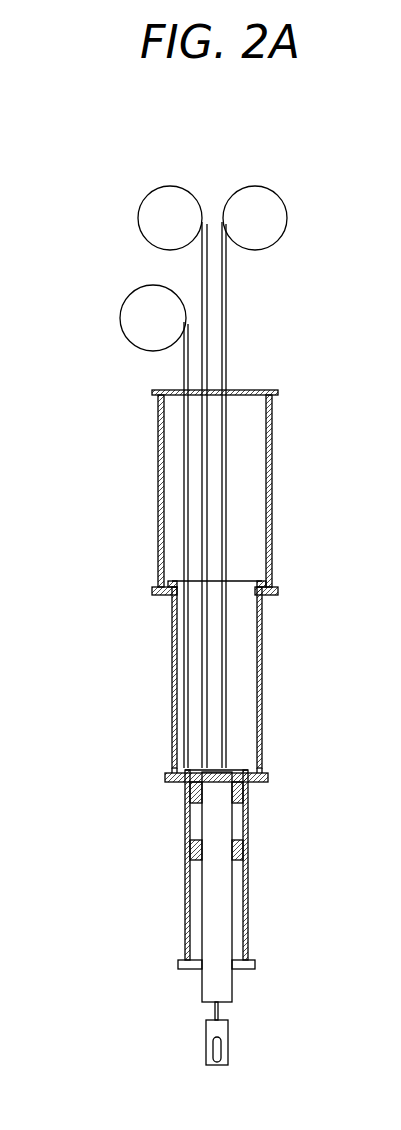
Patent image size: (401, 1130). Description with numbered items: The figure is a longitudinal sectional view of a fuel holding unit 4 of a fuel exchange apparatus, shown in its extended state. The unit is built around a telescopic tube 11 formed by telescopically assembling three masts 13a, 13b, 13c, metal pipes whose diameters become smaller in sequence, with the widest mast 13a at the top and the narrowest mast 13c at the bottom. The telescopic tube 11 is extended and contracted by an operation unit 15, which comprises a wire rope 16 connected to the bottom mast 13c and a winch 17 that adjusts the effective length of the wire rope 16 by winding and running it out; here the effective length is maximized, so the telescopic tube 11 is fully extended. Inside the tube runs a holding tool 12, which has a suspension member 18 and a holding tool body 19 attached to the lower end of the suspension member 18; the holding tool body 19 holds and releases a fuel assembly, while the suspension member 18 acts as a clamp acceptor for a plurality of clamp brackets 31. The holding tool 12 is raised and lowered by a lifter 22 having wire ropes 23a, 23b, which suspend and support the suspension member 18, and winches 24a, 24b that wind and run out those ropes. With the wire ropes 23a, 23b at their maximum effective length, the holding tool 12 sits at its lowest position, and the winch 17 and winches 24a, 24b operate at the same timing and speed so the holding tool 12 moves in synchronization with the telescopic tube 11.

The wire feeding unit 4 is at (198, 433).
The winch 24a is at (150, 212).
The winch 24b is at (267, 223).
The wire rope 23a is at (202, 273).
The wire rope 23b is at (226, 353).
The operation unit 15 is at (104, 526).
The winch 17 is at (128, 317).
The wire rope 16 is at (184, 440).
The telescopic tube 11 is at (231, 679).
The mast 13a is at (162, 502).
The mast 13b is at (172, 677).
The mast 13c is at (185, 922).
The lifter 22 is at (246, 501).
The clamp bracket 31 is at (190, 792).
The holding tool 12 is at (224, 923).
The suspension member 18 is at (218, 922).
The holding tool body 19 is at (207, 1047).